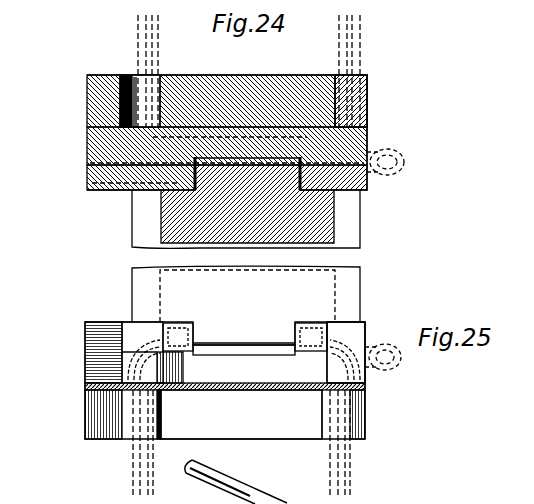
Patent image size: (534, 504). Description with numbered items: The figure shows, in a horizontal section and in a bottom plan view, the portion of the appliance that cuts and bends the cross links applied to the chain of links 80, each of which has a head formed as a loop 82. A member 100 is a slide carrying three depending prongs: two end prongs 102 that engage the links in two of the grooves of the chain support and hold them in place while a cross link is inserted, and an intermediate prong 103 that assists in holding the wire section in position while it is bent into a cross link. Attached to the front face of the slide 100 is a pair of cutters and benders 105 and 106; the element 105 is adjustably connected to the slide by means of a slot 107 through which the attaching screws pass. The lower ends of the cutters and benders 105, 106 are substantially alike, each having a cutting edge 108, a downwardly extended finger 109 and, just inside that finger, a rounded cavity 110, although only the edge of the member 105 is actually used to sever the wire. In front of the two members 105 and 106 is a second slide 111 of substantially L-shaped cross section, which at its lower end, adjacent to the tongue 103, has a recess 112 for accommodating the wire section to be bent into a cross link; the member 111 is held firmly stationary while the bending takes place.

In FIG. 24, the link 80 is at (137, 35).
In FIG. 25, the link 80 is at (133, 468).
In FIG. 24, the loop 82 is at (405, 158).
In FIG. 25, the loop 82 is at (401, 360).
In FIG. 24, the member 100 is at (250, 77).
In FIG. 25, the member 100 is at (259, 440).
In FIG. 25, the end prongs 102 is at (160, 415).
In FIG. 25, the intermediate prong 103 is at (244, 359).
In FIG. 24, the cutter and bender 105 is at (87, 172).
In FIG. 25, the cutter and bender 105 is at (85, 333).
In FIG. 24, the cutter and bender 106 is at (367, 150).
In FIG. 25, the cutter and bender 106 is at (348, 343).
In FIG. 24, the slot 107 is at (119, 107).
In FIG. 25, the cutting edge 108 is at (122, 372).
In FIG. 25, the finger 109 is at (190, 334).
In FIG. 25, the rounded cavity 110 is at (174, 333).
In FIG. 24, the second slide 111 is at (333, 218).
In FIG. 25, the second slide 111 is at (363, 274).
In FIG. 24, the recess 112 is at (250, 163).
In FIG. 25, the recess 112 is at (272, 344).